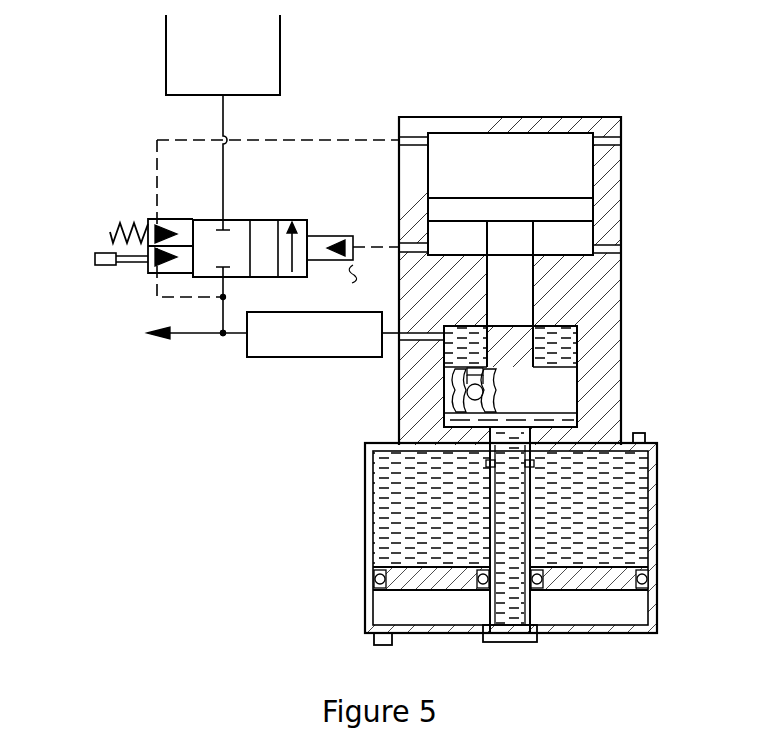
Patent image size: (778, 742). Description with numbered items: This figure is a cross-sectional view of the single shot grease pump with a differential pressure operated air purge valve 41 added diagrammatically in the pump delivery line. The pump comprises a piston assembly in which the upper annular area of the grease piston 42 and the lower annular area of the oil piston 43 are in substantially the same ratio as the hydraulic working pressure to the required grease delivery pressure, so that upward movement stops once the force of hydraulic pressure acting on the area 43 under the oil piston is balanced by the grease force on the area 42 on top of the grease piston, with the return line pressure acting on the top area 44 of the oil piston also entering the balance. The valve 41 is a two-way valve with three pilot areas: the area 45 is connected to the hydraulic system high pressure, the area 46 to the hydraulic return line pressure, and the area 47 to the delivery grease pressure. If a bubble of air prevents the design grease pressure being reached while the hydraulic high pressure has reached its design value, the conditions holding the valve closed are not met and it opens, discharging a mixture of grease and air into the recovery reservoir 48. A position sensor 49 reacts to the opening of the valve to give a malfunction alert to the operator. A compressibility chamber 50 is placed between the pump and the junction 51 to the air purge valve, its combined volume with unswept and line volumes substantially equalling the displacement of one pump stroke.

The air purge valve 41 is at (293, 220).
The upper annular area of the grease piston 42 is at (562, 368).
The lower annular area of the oil piston 43 is at (560, 222).
The top area of the oil piston 44 is at (560, 197).
The pilot area connected to hydraulic system high pressure 45 is at (375, 309).
The pilot area connected to hydraulic system return line pressure 46 is at (148, 221).
The pilot area connected to delivery grease pressure 47 is at (165, 314).
The recovery reservoir 48 is at (280, 77).
The position sensor 49 is at (148, 273).
The compressibility chamber 50 is at (302, 357).
The junction 51 is at (220, 337).